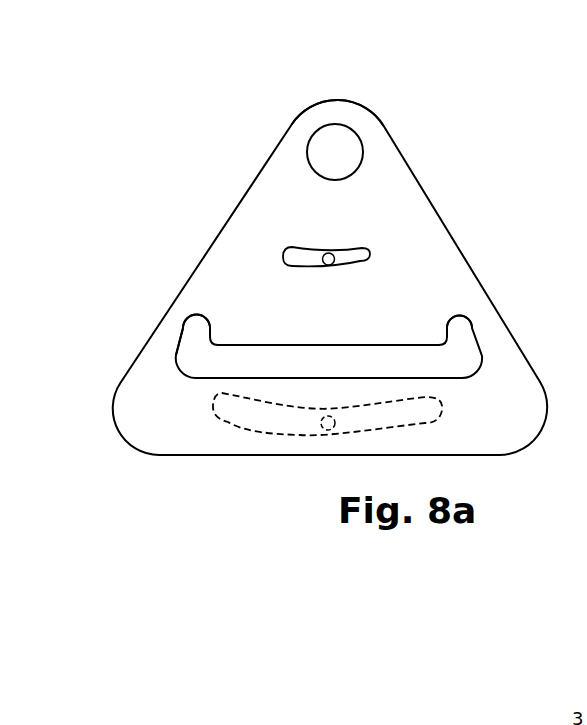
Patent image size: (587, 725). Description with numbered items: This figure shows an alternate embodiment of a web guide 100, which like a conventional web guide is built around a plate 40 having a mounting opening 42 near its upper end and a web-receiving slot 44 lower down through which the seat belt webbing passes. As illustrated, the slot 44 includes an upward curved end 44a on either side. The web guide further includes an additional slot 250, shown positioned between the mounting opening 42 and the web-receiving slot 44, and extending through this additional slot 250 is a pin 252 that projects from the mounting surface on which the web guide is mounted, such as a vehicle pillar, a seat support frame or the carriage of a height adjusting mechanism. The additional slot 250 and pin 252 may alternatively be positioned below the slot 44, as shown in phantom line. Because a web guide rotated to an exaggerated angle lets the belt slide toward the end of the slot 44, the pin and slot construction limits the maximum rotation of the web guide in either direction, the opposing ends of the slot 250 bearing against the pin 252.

The web guide 100 is at (233, 237).
The plate 40 is at (338, 113).
The mounting opening 42 is at (327, 162).
The web-receiving slot 44 is at (308, 372).
The upward curved end 44a is at (185, 357).
The additional slot 250 is at (357, 254).
The pin 252 is at (333, 254).